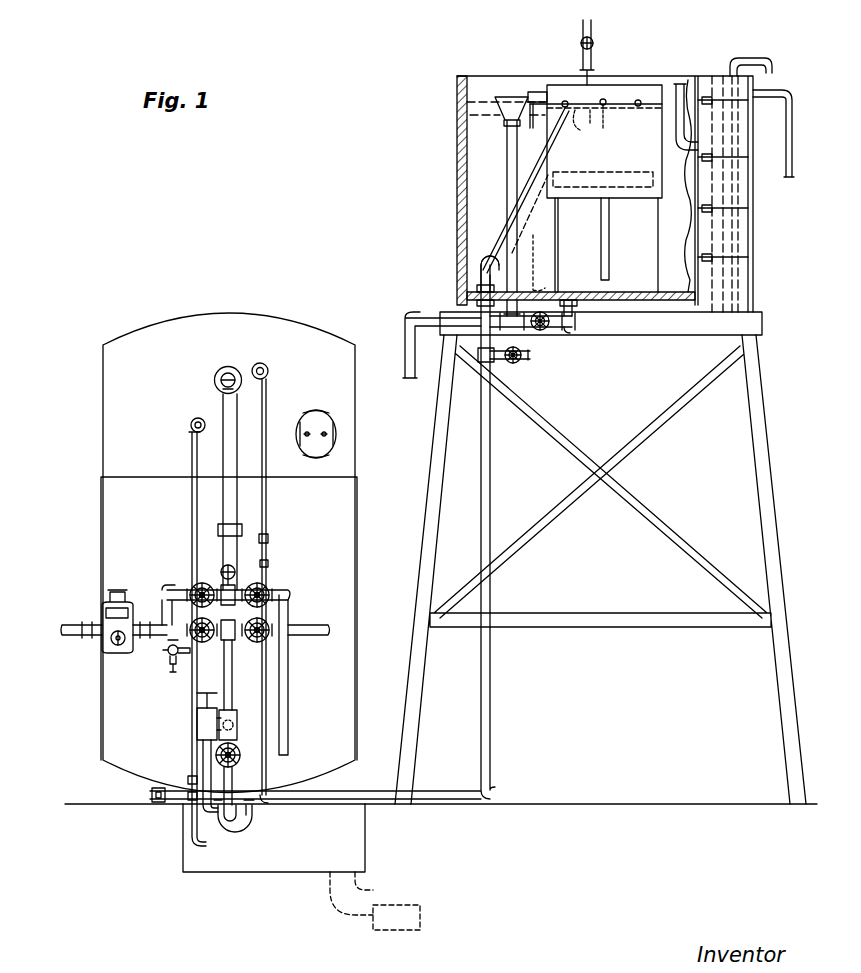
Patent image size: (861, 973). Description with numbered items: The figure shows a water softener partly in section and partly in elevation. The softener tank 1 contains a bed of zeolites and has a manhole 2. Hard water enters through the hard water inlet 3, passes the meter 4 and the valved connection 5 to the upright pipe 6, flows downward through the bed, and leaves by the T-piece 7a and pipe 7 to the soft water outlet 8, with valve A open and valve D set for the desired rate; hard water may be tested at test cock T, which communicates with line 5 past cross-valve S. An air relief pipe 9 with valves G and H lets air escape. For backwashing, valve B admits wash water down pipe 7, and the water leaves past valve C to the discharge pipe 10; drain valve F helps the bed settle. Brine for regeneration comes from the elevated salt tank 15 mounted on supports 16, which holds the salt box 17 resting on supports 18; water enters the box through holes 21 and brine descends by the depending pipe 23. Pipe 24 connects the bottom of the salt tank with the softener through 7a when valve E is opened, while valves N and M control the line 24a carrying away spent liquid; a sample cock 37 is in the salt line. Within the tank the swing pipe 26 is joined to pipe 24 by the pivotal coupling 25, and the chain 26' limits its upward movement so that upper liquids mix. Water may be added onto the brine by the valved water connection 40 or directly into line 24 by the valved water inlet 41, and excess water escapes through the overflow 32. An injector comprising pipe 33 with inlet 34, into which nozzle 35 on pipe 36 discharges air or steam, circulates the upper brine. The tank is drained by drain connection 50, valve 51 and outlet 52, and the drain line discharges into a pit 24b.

The softener tank 1 is at (357, 498).
The manhole 2 is at (320, 418).
The hard water inlet 3 is at (76, 642).
The meter 4 is at (107, 633).
The valved connection 5 is at (175, 588).
The upright pipe 6 is at (232, 516).
The pipe 7 is at (226, 654).
The T-piece 7a is at (196, 717).
The soft water outlet 8 is at (308, 625).
The air relief pipe 9 is at (267, 516).
The discharge pipe 10 is at (287, 709).
The salt tank 15 is at (457, 176).
The supports 16 is at (757, 388).
The salt box 17 is at (596, 141).
The supports 18 is at (549, 250).
The holes 21 is at (543, 90).
The depending pipe 23 is at (609, 252).
The pipe 24 is at (485, 469).
The pipe line 24a is at (193, 433).
The pit 24b is at (366, 862).
The pivotal coupling 25 is at (478, 276).
The swing pipe 26 is at (519, 190).
The chain 26' is at (561, 252).
The overflow 32 is at (511, 94).
The injector pipe 33 is at (679, 83).
The inlet 34 is at (722, 157).
The nozzle 35 is at (723, 76).
The pipe 36 is at (760, 57).
The sample cock 37 is at (247, 737).
The valved water connection 40 is at (594, 44).
The valved water inlet 41 is at (513, 364).
The drain connection 50 is at (572, 330).
The valve 51 is at (545, 332).
The outlet 52 is at (434, 361).
The valve A is at (193, 581).
The valve B is at (220, 638).
The valve C is at (273, 584).
The valve D is at (268, 638).
The valve E is at (240, 752).
The drain valve F is at (197, 736).
The valve G is at (269, 538).
The valve H is at (269, 563).
The cross-valve S is at (169, 653).
The test cock T is at (166, 673).
The valve N is at (188, 780).
The valve M is at (188, 797).